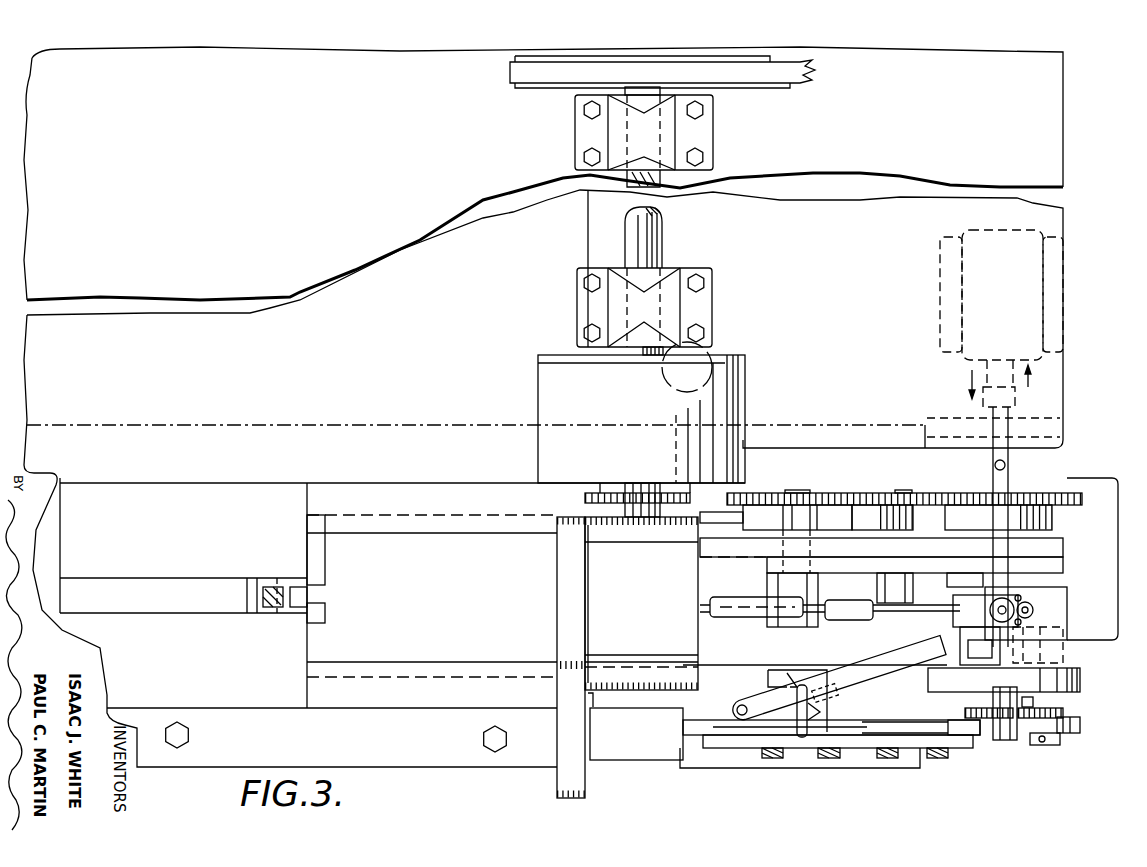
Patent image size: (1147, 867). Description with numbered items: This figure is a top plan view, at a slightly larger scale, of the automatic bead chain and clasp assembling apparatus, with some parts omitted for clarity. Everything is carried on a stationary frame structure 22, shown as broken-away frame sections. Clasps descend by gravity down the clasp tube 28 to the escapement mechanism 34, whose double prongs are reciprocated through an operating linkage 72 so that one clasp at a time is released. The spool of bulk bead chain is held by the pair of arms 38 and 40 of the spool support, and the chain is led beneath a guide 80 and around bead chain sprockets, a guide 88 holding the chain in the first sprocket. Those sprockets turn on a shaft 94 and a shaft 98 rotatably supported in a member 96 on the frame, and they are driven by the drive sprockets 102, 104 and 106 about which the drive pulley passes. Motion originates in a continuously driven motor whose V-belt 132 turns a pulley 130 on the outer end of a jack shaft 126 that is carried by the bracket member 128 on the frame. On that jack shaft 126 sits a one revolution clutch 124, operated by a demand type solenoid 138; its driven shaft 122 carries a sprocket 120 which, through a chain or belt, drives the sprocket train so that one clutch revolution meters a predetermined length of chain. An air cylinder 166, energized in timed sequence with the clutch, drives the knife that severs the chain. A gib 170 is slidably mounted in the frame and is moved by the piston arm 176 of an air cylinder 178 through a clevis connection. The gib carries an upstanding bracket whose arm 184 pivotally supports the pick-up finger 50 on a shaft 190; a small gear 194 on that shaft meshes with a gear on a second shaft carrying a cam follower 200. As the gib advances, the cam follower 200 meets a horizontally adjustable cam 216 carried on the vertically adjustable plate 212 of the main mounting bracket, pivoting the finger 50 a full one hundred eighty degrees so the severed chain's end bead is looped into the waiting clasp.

The stationary frame structure 22 is at (249, 219).
The clasp tube 28 is at (920, 650).
The escapement mechanism 34 is at (816, 683).
The arm 38 is at (628, 507).
The arm 40 is at (640, 693).
The pick-up finger 50 is at (1068, 608).
The operating linkage 72 is at (803, 737).
The guide 80 is at (737, 620).
The guide 88 is at (848, 602).
The shaft 94 is at (807, 493).
The member 96 is at (1065, 547).
The shaft 98 is at (902, 493).
The drive sprocket 102 is at (773, 493).
The drive sprocket 104 is at (948, 493).
The drive sprocket 106 is at (1067, 497).
The sprocket 120 is at (618, 485).
The driven shaft 122 is at (585, 497).
The one revolution clutch 124 is at (745, 402).
The jack shaft 126 is at (665, 228).
The bracket member 128 is at (713, 133).
The pulley 130 is at (533, 87).
The V-belt 132 is at (803, 86).
The solenoid 138 is at (707, 353).
The air cylinder 166 is at (940, 284).
The gib 170 is at (363, 532).
The piston arm 176 is at (180, 577).
The air cylinder 178 is at (62, 520).
The arm 184 is at (1082, 680).
The shaft 190 is at (1060, 682).
The small gear 194 is at (1078, 717).
The cam follower 200 is at (1013, 740).
The vertically adjustable plate 212 is at (935, 752).
The cam 216 is at (980, 735).